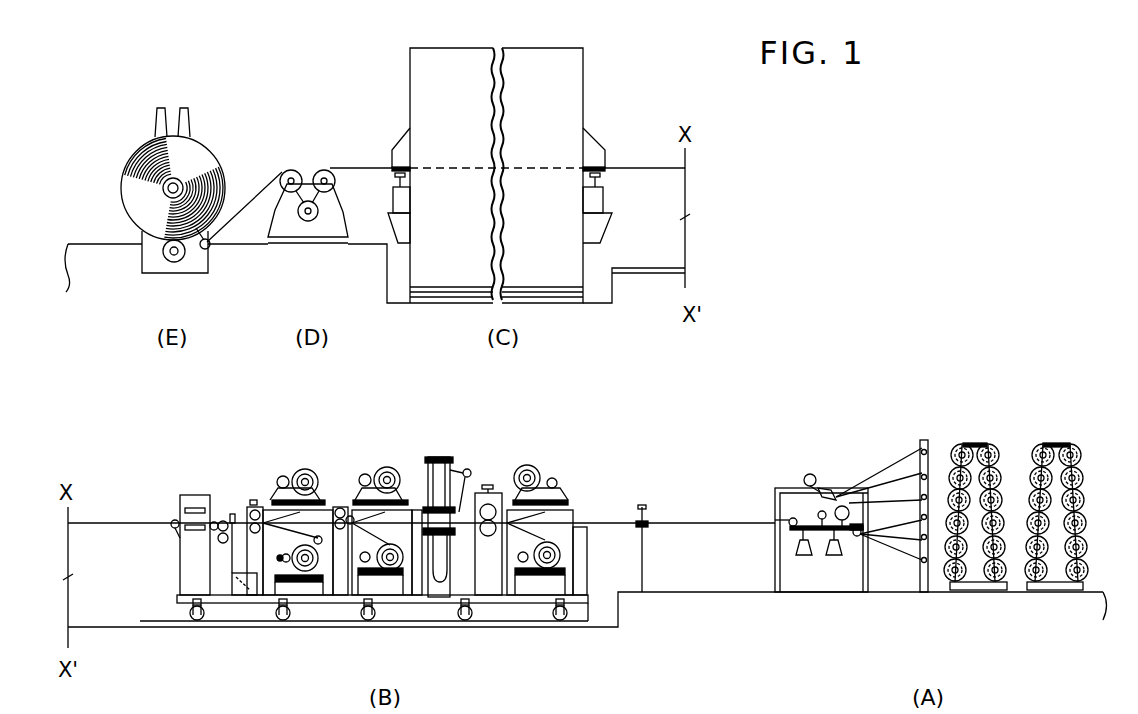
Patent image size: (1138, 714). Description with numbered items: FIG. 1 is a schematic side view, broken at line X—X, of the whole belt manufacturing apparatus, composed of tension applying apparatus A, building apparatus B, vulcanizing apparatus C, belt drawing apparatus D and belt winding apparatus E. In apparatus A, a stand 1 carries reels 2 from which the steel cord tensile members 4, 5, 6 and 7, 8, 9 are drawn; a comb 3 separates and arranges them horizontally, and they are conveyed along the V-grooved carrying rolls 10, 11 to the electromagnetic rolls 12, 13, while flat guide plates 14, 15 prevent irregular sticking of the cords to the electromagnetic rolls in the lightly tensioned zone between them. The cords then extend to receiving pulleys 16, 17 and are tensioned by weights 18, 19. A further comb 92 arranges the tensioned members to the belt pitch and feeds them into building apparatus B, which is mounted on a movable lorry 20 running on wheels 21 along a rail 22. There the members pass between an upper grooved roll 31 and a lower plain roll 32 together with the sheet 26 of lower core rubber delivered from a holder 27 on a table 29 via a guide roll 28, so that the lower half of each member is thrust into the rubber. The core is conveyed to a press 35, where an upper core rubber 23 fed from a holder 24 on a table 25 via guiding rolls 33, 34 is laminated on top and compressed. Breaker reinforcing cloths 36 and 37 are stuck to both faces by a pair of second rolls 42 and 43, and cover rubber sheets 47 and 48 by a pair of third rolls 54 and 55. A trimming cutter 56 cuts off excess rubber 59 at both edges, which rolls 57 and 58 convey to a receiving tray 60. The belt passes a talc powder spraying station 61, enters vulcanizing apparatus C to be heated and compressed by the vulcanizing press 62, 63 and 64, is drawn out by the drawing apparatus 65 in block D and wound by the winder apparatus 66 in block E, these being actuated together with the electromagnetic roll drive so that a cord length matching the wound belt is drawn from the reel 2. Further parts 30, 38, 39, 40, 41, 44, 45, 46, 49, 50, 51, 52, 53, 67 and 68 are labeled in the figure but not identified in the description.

The stand 1 is at (977, 443).
The reel 2 is at (960, 443).
The comb 3 is at (925, 449).
The steel cord tensile member 4 is at (883, 480).
The steel cord tensile member 5 is at (888, 468).
The steel cord tensile member 6 is at (895, 521).
The steel cord tensile member 7 is at (862, 532).
The steel cord tensile member 8 is at (905, 541).
The steel cord tensile member 9 is at (915, 590).
The carrying roll 10 is at (826, 487).
The carrying roll 11 is at (862, 592).
The electromagnetic roll 12 is at (806, 475).
The electromagnetic roll 13 is at (850, 513).
The flat guide plate 14 is at (816, 488).
The flat guide plate 15 is at (856, 538).
The receiving pulley 16 is at (789, 522).
The receiving pulley 17 is at (820, 531).
The tensioning weight 18 is at (800, 556).
The tensioning weight 19 is at (834, 556).
The movable lorry 20 is at (525, 600).
The wheel 21 is at (518, 562).
The rail 22 is at (578, 622).
The upper core rubber 23 is at (512, 500).
The holder 24 is at (541, 474).
The table 25 is at (558, 486).
The lower core rubber sheet 26 is at (575, 509).
The holder 27 is at (540, 570).
The guide roll 28 is at (586, 552).
The table 29 is at (618, 592).
The nip roller 30 is at (496, 524).
The upper grooved roll 31 is at (500, 493).
The lower plain roll 32 is at (448, 580).
The guiding roll 33 is at (488, 504).
The guiding roll 34 is at (467, 469).
The press 35 is at (440, 457).
The breaker reinforcing cloth 36 is at (367, 474).
The breaker reinforcing cloth 37 is at (365, 562).
The upper roller 38 is at (390, 467).
The guide frame 39 is at (340, 535).
The lower roller unit 40 is at (392, 575).
The column 41 is at (430, 457).
The second roll 42 is at (341, 508).
The second roll 43 is at (360, 488).
The support plate 44 is at (398, 500).
The lower roller 45 is at (400, 568).
The upper roller 46 is at (314, 482).
The cover rubber sheet 47 is at (278, 481).
The cover rubber sheet 48 is at (282, 562).
The lower roller 49 is at (294, 553).
The pressure roller 50 is at (288, 563).
The support plate 51 is at (305, 469).
The roller support 52 is at (282, 477).
The lower roller unit 53 is at (283, 582).
The third roll 54 is at (218, 530).
The third roll 55 is at (253, 560).
The trimming cutter 56 is at (234, 513).
The roll 57 is at (223, 521).
The roll 58 is at (219, 533).
The cut-off excess rubber 59 is at (232, 563).
The receiving tray 60 is at (232, 582).
The talc powder spraying station 61 is at (181, 493).
The vulcanizing press 62 is at (592, 140).
The vulcanizing press 63 is at (408, 140).
The vulcanizing press 64 is at (462, 48).
The drawing apparatus 65 is at (322, 228).
The winder apparatus 66 is at (200, 270).
The take-up reel 67 is at (207, 157).
The guide bar 68 is at (793, 553).
The comb 92 is at (645, 505).